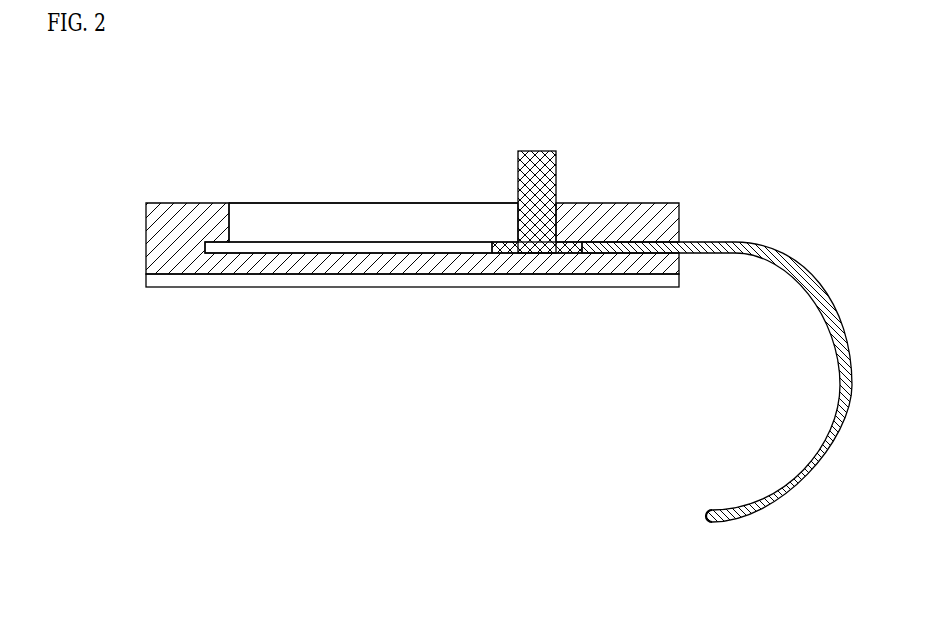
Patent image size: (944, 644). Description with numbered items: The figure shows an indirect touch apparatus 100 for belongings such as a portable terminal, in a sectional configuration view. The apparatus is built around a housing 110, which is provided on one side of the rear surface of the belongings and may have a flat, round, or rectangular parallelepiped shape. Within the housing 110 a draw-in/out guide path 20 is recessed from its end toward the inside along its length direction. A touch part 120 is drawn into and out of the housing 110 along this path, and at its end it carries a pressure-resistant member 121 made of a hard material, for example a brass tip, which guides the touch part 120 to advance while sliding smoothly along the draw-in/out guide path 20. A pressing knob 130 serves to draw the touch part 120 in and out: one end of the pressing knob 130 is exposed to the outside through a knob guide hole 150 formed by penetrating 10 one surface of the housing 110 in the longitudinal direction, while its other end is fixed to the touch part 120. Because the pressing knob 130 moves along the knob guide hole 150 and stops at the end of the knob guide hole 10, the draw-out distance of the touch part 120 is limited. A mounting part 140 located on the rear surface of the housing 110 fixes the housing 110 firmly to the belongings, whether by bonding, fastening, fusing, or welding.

The indirect touch apparatus 100 is at (686, 152).
The housing 110 is at (158, 236).
The mounting part 140 is at (204, 288).
The draw-in/out guide path 20 is at (329, 248).
The knob guide hole 10 is at (405, 226).
The knob guide hole 150 is at (473, 203).
The pressing knob 130 is at (548, 151).
The touch part 120 is at (809, 287).
The pressure-resistant member 121 is at (703, 519).